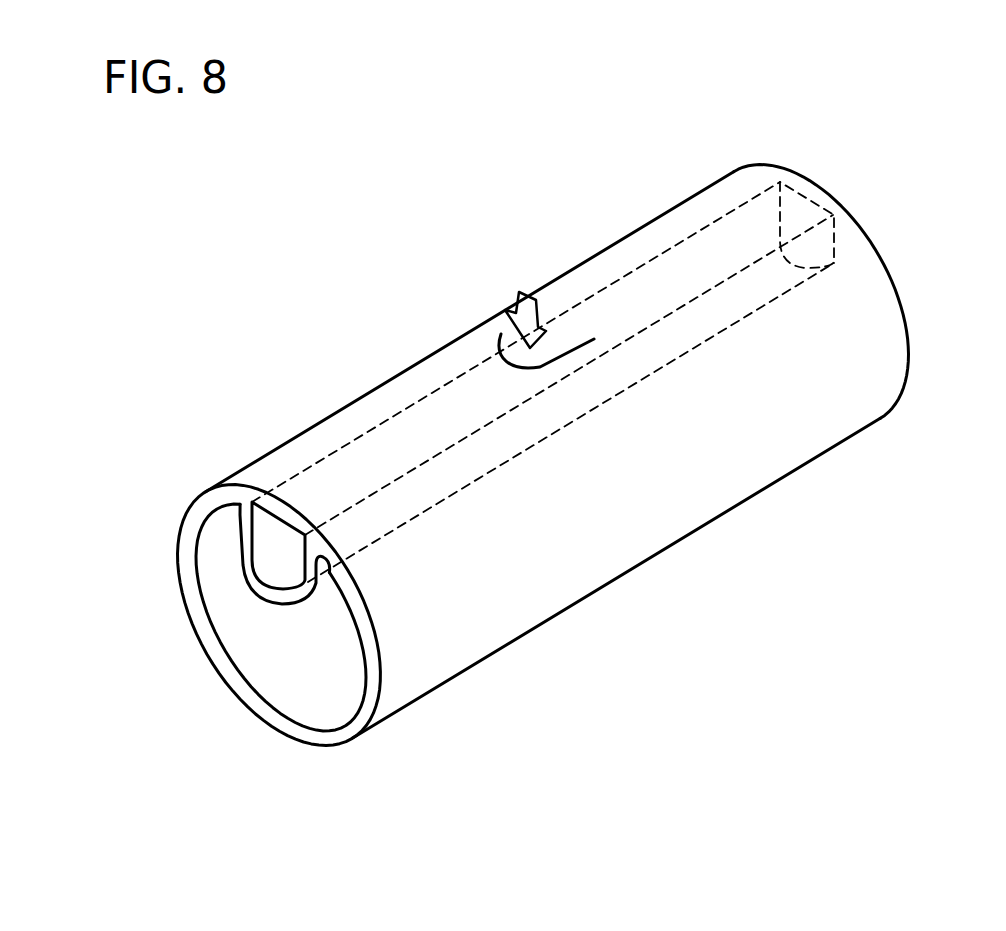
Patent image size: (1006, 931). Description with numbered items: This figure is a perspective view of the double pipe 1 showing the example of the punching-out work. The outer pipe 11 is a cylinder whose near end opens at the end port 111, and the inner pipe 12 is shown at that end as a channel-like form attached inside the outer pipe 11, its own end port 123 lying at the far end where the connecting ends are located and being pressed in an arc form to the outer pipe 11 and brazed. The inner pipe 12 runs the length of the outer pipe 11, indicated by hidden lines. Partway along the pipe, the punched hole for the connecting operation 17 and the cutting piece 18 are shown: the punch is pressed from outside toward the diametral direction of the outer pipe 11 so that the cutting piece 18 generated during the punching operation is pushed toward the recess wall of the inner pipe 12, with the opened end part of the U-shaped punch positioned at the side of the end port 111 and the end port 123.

The carrier tube assembly 1 is at (398, 341).
The outer pipe 11 is at (580, 547).
The inner pipe 12 is at (249, 596).
The elastic engaging piece 17 is at (557, 335).
The cutting piece 18 is at (546, 330).
The end port 111 is at (907, 303).
The end port 123 is at (835, 240).